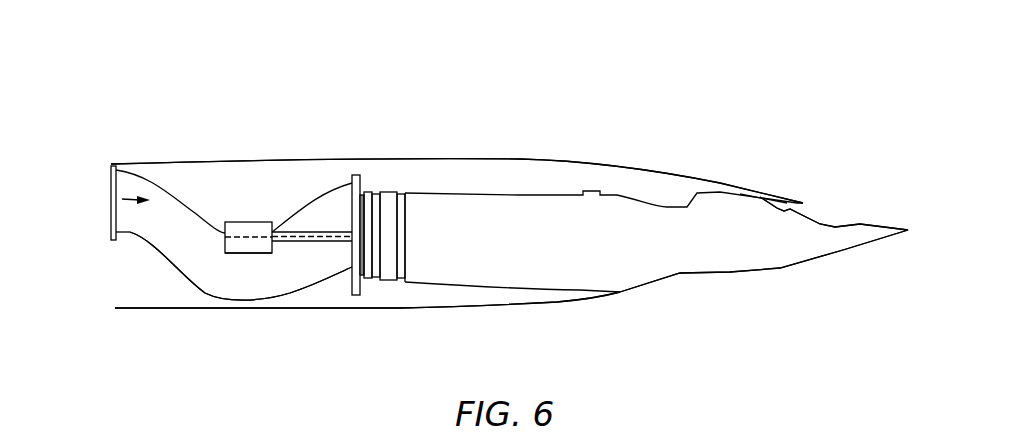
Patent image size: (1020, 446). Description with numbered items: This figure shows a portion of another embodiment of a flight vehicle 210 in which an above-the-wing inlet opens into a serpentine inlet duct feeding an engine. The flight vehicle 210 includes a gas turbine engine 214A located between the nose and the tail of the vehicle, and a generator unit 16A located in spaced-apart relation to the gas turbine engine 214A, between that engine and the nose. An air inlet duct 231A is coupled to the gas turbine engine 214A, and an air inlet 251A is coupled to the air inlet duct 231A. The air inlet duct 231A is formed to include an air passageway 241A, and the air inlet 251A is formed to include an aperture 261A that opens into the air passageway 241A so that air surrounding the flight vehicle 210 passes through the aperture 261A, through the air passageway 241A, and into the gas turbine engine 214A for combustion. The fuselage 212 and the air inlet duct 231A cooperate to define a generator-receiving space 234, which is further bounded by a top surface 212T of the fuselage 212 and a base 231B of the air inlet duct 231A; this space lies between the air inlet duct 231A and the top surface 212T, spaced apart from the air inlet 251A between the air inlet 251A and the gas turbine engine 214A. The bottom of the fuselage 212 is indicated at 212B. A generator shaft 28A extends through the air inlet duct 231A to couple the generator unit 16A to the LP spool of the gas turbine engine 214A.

The flight vehicle 210 is at (810, 97).
The fuselage 212 is at (726, 176).
The top surface of the fuselage 212T is at (630, 170).
The nacelle bottom wall 212B is at (556, 305).
The gas turbine engine 214A is at (533, 184).
The air inlet 251A is at (117, 152).
The air passageway 241A is at (122, 199).
The aperture 261A is at (112, 230).
The air inlet duct 231A is at (203, 295).
The base of the air inlet duct 231B is at (252, 268).
The generator unit 16A is at (243, 209).
The generator-receiving space 234 is at (264, 208).
The generator shaft 28A is at (297, 245).